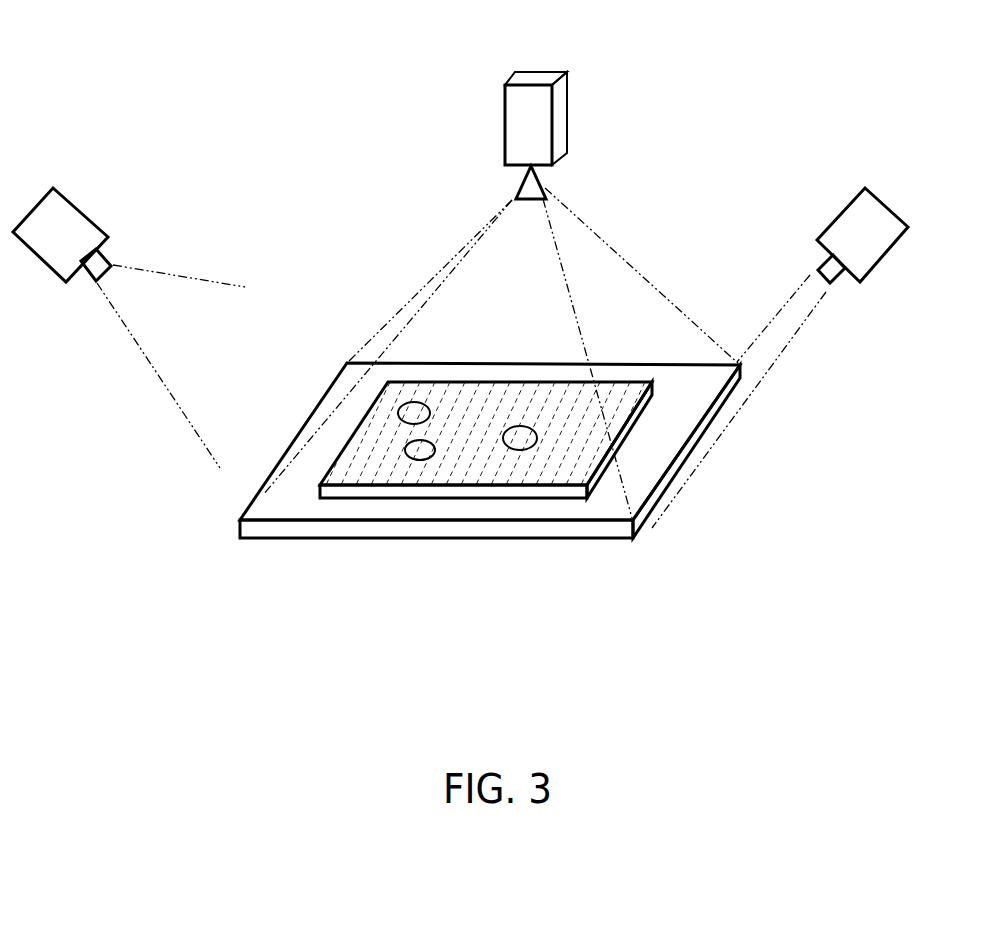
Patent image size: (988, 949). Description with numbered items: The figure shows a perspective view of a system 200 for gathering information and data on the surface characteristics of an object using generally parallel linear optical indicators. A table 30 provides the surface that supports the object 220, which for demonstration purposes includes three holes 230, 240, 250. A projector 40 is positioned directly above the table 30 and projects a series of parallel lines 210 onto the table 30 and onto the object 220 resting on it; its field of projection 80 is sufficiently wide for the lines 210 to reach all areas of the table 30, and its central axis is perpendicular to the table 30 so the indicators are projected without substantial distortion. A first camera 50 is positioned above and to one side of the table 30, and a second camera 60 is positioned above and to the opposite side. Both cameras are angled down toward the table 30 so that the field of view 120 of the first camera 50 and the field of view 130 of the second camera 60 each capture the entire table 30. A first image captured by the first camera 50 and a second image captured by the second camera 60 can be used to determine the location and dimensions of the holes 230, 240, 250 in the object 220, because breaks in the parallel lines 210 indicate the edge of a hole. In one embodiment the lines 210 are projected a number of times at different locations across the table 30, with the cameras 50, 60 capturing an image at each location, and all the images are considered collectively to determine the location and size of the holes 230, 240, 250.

The system 200 is at (258, 147).
The first camera 50 is at (67, 225).
The second camera 60 is at (848, 225).
The projector 40 is at (532, 76).
The field of projection 80 is at (498, 278).
The field of view 120 is at (165, 313).
The field of view 130 is at (777, 335).
The table 30 is at (663, 448).
The parallel lines 210 is at (570, 472).
The object 220 is at (380, 492).
The hole 230 is at (415, 416).
The hole 240 is at (420, 450).
The hole 250 is at (522, 435).